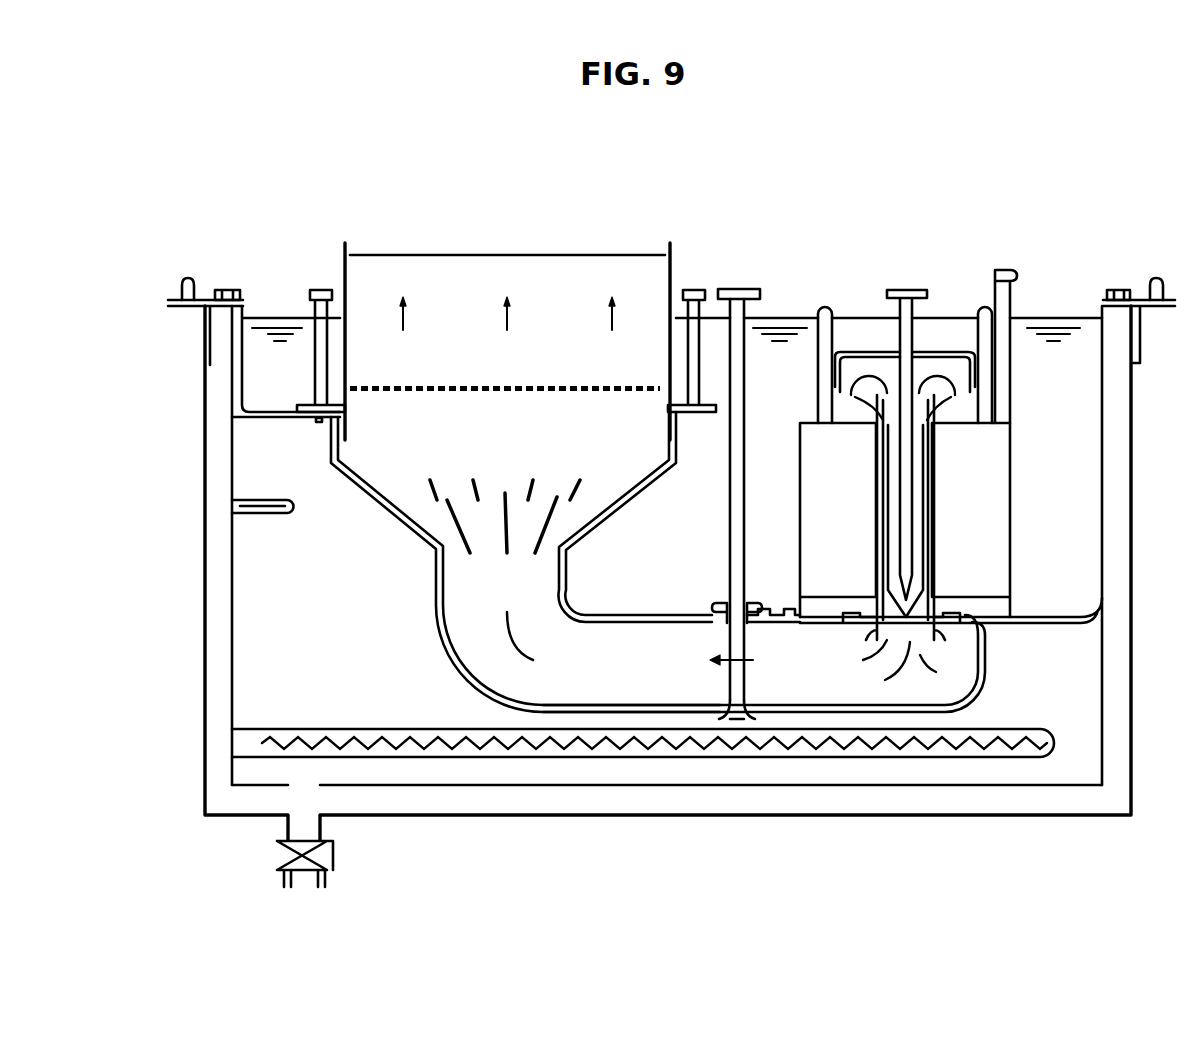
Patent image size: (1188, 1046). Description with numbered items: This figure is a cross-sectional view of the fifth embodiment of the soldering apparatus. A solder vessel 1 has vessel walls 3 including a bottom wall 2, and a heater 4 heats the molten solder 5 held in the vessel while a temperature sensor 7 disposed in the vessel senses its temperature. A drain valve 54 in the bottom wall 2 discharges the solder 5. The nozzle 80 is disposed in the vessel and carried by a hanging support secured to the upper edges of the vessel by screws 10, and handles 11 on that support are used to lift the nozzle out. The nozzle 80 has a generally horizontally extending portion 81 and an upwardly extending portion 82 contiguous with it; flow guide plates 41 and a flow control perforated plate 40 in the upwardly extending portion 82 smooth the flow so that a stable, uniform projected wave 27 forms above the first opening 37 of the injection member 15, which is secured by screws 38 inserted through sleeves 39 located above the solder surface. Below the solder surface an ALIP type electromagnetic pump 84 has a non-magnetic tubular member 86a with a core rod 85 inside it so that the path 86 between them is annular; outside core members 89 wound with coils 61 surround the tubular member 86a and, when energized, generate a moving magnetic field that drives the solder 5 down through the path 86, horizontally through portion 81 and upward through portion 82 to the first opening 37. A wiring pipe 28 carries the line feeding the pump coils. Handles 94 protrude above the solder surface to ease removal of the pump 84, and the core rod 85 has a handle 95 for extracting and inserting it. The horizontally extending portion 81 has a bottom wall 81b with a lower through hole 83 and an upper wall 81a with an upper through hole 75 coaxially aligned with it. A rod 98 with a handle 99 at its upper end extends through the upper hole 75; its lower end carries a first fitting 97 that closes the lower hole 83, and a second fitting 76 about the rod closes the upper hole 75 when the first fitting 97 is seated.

The solder vessel 1 is at (1122, 756).
The bottom wall 2 is at (492, 806).
The vessel walls 3 is at (212, 384).
The heater 4 is at (314, 729).
The molten solder 5 is at (1086, 722).
The temperature sensor 7 is at (260, 500).
The screws 10 is at (222, 288).
The handles 11 is at (190, 278).
The injection member 15 is at (678, 272).
The projected wave 27 is at (503, 266).
The wiring pipe 28 is at (1014, 300).
The first opening 37 is at (441, 282).
The screws 38 is at (316, 377).
The sleeves 39 is at (318, 290).
The flow control perforated plate 40 is at (440, 388).
The flow guide plates 41 is at (443, 548).
The drain valve 54 is at (343, 853).
The coils 61 is at (975, 578).
The upper through hole 75 is at (724, 630).
The second fitting 76 is at (745, 600).
The nozzle 80 is at (378, 504).
The horizontally extending portion 81 is at (645, 613).
The upper wall 81a is at (618, 620).
The bottom wall 81b is at (604, 705).
The upwardly extending portion 82 is at (620, 505).
The lower through hole 83 is at (722, 700).
The electromagnetic pump 84 is at (1040, 460).
The core rod 85 is at (906, 487).
The path 86 is at (926, 522).
The tubular member 86a is at (878, 476).
The outside core members 89 is at (1000, 546).
The handles 94 is at (826, 310).
The handle 95 is at (906, 290).
The first fitting 97 is at (745, 702).
The rod 98 is at (750, 396).
The handle 99 is at (744, 299).